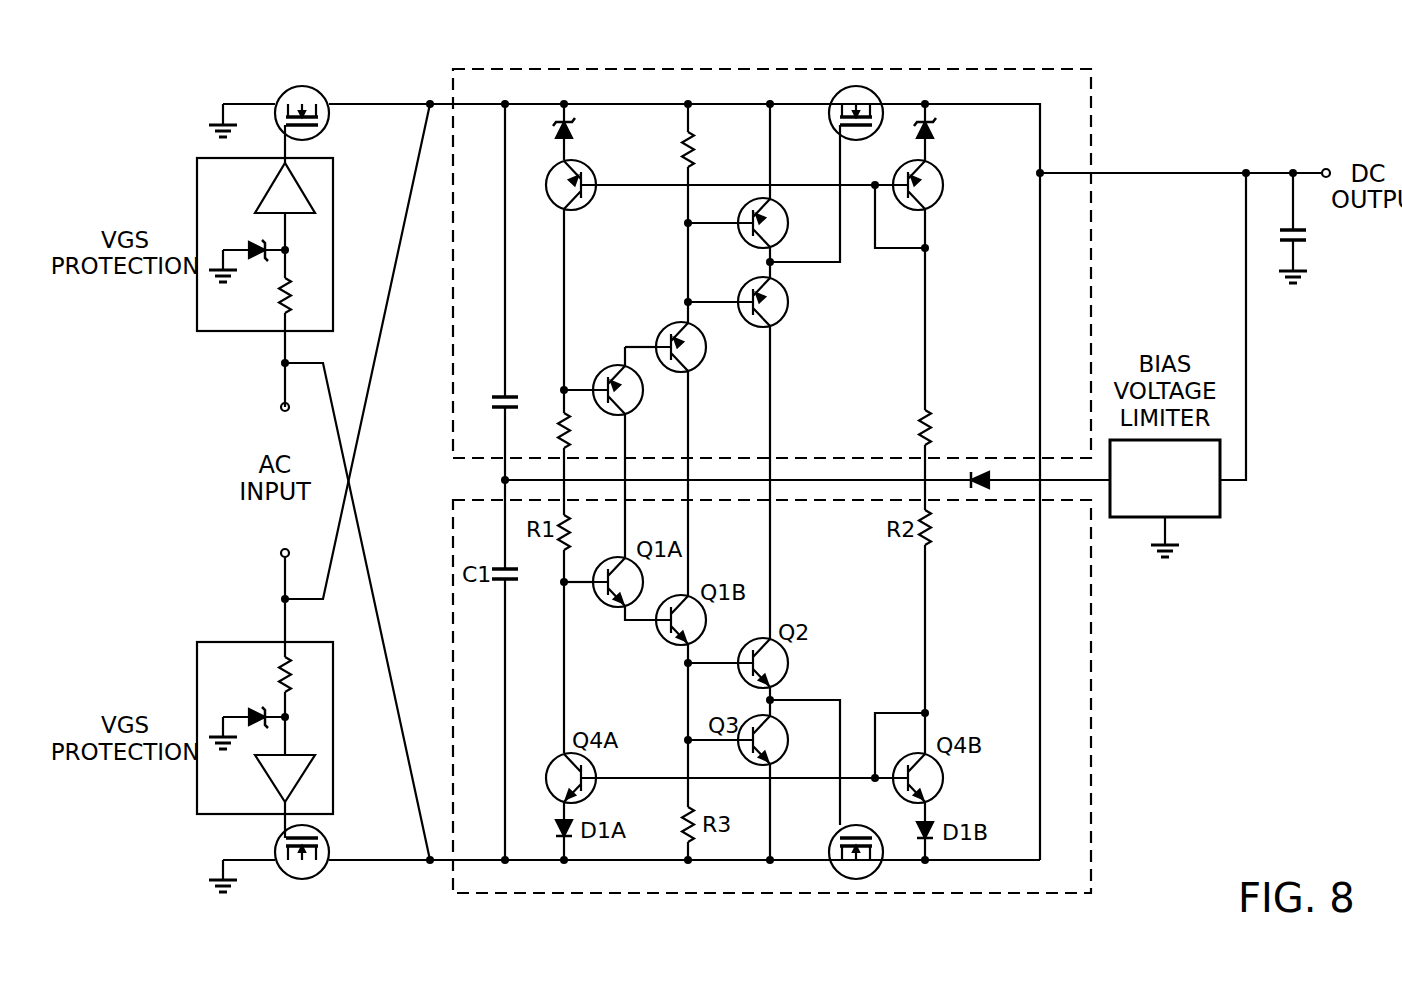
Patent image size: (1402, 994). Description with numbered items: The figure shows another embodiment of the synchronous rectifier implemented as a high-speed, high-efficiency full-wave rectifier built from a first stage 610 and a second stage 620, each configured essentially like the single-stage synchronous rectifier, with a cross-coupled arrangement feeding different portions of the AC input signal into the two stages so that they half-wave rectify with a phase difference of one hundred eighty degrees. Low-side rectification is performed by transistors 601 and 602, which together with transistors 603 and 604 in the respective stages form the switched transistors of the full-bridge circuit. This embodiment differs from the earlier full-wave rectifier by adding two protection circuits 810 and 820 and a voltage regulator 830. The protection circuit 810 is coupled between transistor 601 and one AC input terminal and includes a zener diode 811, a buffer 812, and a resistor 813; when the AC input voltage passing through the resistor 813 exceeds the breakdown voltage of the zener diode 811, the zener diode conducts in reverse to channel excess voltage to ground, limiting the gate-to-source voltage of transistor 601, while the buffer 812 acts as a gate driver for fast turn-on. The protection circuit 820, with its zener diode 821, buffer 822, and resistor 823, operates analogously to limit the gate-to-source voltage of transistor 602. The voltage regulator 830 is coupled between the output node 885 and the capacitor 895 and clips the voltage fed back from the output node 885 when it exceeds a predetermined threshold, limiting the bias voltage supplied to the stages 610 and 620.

The transistor 601 is at (318, 874).
The transistor 602 is at (286, 88).
The transistor 603 is at (862, 878).
The transistor 604 is at (853, 86).
The first stage 610 is at (1092, 797).
The second stage 620 is at (1092, 112).
The protection circuit 810 is at (198, 642).
The zener diode 811 is at (255, 712).
The buffer 812 is at (272, 790).
The resistor 813 is at (295, 690).
The protection circuit 820 is at (206, 333).
The zener diode 821 is at (255, 243).
The buffer 822 is at (300, 192).
The resistor 823 is at (295, 292).
The voltage regulator 830 is at (1194, 518).
The output node 885 is at (1246, 170).
The capacitor 895 is at (1302, 243).